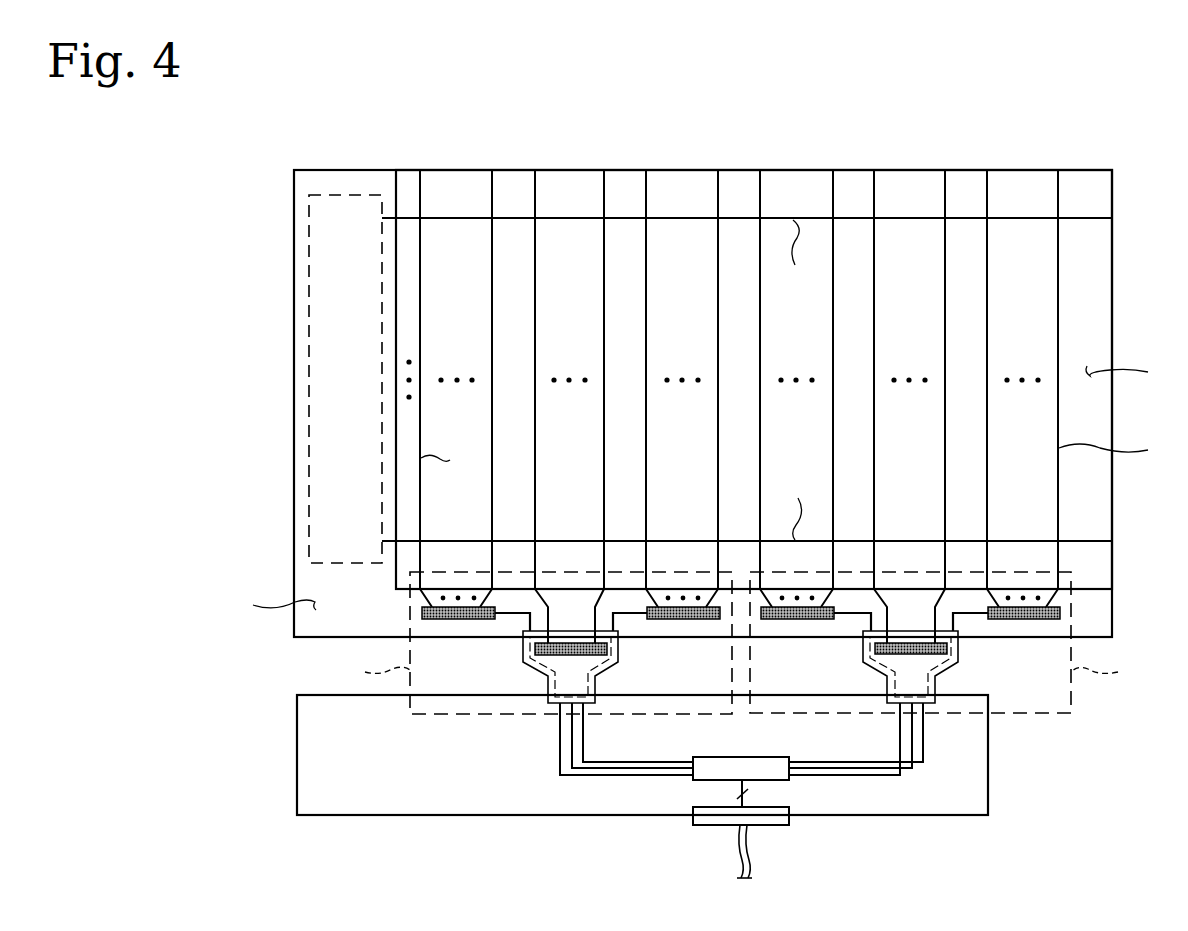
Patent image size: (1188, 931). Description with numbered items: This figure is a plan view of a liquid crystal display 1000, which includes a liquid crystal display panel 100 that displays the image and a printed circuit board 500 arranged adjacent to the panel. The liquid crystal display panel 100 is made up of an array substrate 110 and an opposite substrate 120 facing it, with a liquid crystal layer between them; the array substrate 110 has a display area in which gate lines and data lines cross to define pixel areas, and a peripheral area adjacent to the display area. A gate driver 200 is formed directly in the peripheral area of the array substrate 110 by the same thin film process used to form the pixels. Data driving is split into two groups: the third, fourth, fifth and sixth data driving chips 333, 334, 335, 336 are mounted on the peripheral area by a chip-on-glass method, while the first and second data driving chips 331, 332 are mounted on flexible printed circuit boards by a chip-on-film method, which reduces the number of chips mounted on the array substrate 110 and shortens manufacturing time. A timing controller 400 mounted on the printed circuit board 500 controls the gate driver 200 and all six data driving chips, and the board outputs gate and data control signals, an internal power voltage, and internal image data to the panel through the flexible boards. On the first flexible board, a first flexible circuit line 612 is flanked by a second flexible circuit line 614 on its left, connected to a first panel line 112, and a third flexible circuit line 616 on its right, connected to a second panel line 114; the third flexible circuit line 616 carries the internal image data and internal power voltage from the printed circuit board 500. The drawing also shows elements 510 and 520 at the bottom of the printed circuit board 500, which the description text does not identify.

The liquid crystal display 1000 is at (763, 123).
The liquid crystal display panel 100 is at (415, 102).
The array substrate 110 is at (322, 170).
The opposite substrate 120 is at (395, 181).
The gate driver 200 is at (310, 318).
The third data driving chip 333 is at (421, 613).
The fourth data driving chip 334 is at (700, 620).
The fifth data driving chip 335 is at (798, 620).
The sixth data driving chip 336 is at (1061, 612).
The first data driving chip 331 is at (534, 648).
The second data driving chip 332 is at (958, 648).
The first panel line 112 is at (503, 614).
The second panel line 114 is at (632, 614).
The first flexible circuit line 612 is at (572, 685).
The second flexible circuit line 614 is at (560, 690).
The third flexible circuit line 616 is at (590, 688).
The printed circuit board 500 is at (988, 780).
The timing controller 400 is at (790, 779).
The connector 510 is at (770, 826).
The cable 520 is at (738, 855).